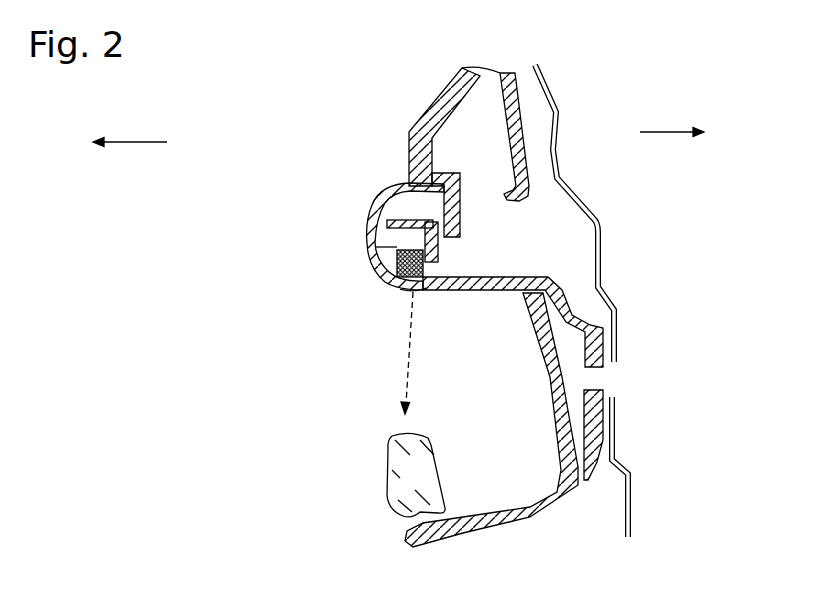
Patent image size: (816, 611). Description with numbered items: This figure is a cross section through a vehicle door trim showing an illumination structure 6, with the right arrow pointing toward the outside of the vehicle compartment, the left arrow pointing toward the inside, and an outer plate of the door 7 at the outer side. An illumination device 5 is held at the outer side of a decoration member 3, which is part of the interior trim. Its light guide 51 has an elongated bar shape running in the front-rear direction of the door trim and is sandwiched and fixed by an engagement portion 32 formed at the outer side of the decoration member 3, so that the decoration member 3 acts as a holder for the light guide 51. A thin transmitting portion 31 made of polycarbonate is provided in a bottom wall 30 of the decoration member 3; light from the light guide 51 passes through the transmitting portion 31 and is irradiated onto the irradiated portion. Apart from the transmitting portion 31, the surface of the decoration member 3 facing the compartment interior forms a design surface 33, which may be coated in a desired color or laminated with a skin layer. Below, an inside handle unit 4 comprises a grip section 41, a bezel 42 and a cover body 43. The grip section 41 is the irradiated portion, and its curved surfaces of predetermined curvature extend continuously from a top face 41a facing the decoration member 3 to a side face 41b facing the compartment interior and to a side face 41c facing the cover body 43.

The decoration member 3 is at (375, 243).
The inside handle unit 4 is at (433, 421).
The illumination device 5 is at (506, 217).
The illumination structure 6 is at (200, 313).
The outer plate of the door 7 is at (603, 288).
The bottom wall 30 is at (401, 287).
The transmitting portion 31 is at (423, 293).
The engagement portion 32 is at (370, 237).
The design surface 33 is at (373, 217).
The grip section 41 is at (399, 488).
The top face 41a is at (395, 433).
The side face 41b is at (388, 480).
The side face 41c is at (440, 478).
The bezel 42 is at (590, 455).
The cover body 43 is at (563, 373).
The light guide 51 is at (438, 257).